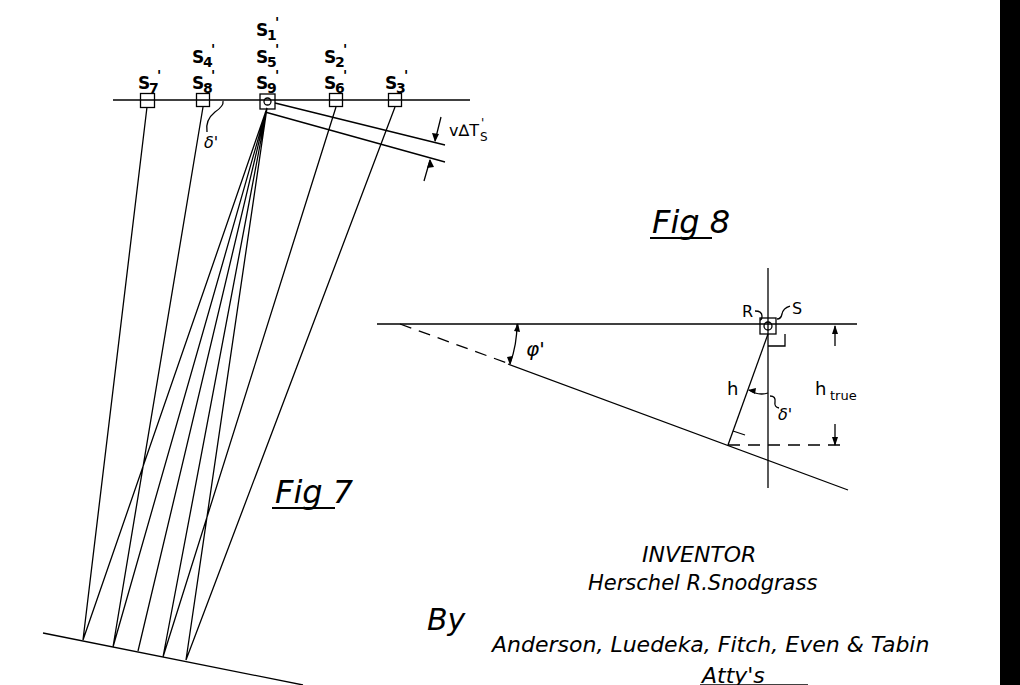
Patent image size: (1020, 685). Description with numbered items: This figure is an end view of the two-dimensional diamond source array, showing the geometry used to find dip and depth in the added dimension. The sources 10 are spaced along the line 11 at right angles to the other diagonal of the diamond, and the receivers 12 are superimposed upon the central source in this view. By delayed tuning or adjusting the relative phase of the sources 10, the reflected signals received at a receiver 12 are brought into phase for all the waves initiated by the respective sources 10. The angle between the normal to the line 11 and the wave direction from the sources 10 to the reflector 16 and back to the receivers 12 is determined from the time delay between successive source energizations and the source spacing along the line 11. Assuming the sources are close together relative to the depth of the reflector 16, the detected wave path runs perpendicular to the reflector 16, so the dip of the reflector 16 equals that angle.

In FIG. 7, the sources 10 is at (153, 107).
In FIG. 7, the line 11 is at (458, 100).
In FIG. 8, the line 11 is at (620, 324).
In FIG. 7, the receivers 12 is at (276, 98).
In FIG. 7, the reflector 16 is at (268, 677).
In FIG. 8, the reflector 16 is at (628, 408).